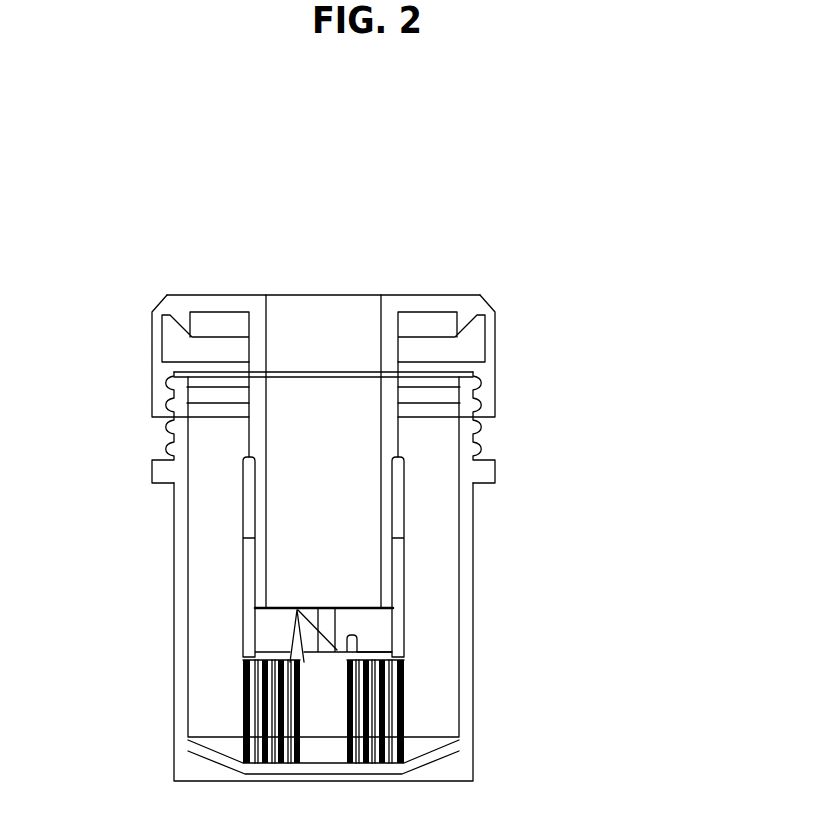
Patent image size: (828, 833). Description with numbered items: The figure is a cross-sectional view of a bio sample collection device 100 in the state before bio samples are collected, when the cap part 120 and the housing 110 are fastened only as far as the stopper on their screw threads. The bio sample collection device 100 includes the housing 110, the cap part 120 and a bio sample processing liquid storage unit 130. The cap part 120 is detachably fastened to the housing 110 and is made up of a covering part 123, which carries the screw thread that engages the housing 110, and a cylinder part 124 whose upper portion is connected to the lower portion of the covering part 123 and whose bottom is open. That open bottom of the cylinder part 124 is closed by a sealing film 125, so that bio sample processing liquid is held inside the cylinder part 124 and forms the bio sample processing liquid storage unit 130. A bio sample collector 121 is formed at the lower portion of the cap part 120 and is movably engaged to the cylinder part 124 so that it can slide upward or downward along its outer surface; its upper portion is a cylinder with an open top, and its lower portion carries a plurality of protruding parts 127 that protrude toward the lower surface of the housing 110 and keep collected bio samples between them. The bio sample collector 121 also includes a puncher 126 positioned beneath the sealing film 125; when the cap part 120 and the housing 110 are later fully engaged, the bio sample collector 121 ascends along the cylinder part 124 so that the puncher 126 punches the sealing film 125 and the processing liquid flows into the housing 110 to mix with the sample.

The bio sample collection device 100 is at (147, 158).
The housing 110 is at (460, 740).
The cap part 120 is at (608, 312).
The bio sample collector 121 is at (398, 575).
The covering part 123 is at (495, 332).
The cylinder part 124 is at (390, 432).
The sealing film 125 is at (290, 606).
The puncher 126 is at (313, 633).
The protruding parts 127 is at (403, 697).
The bio sample processing liquid storage unit 130 is at (330, 521).